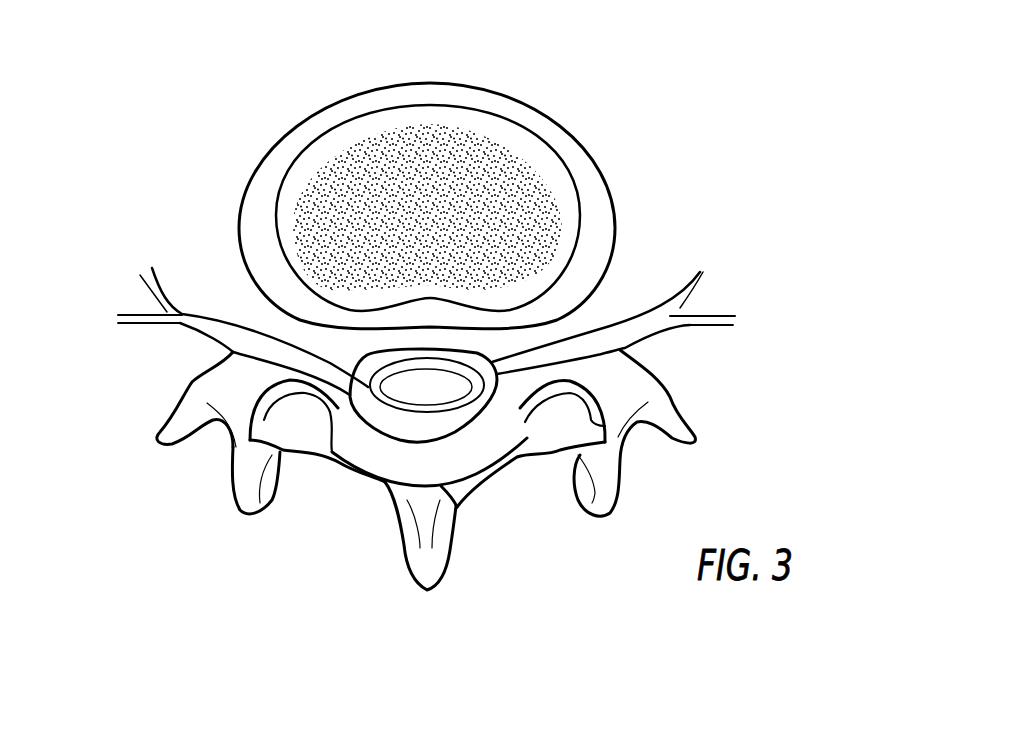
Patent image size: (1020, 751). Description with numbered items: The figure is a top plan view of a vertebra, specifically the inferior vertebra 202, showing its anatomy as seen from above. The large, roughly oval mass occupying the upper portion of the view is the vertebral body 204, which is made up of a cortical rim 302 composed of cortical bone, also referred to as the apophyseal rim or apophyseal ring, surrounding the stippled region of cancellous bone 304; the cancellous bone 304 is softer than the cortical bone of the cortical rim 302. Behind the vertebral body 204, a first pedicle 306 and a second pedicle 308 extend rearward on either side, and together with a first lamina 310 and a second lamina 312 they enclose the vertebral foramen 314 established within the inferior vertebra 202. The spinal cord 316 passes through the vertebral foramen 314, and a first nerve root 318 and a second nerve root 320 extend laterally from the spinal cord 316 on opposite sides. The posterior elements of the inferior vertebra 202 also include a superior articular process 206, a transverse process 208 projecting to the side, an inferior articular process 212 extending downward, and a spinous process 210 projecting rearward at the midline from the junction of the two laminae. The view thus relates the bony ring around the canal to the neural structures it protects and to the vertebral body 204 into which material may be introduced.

The inferior vertebra 202 is at (606, 99).
The vertebral body 204 is at (604, 188).
The superior articular process 206 is at (273, 438).
The transverse process 208 is at (180, 425).
The spinous process 210 is at (427, 590).
The inferior articular process 212 is at (247, 503).
The cortical rim 302 is at (260, 187).
The cancellous bone 304 is at (337, 160).
The first pedicle 306 is at (585, 320).
The second pedicle 308 is at (273, 322).
The first lamina 310 is at (498, 415).
The second lamina 312 is at (358, 423).
The vertebral foramen 314 is at (413, 460).
The spinal cord 316 is at (430, 395).
The first nerve root 318 is at (675, 315).
The second nerve root 320 is at (157, 315).